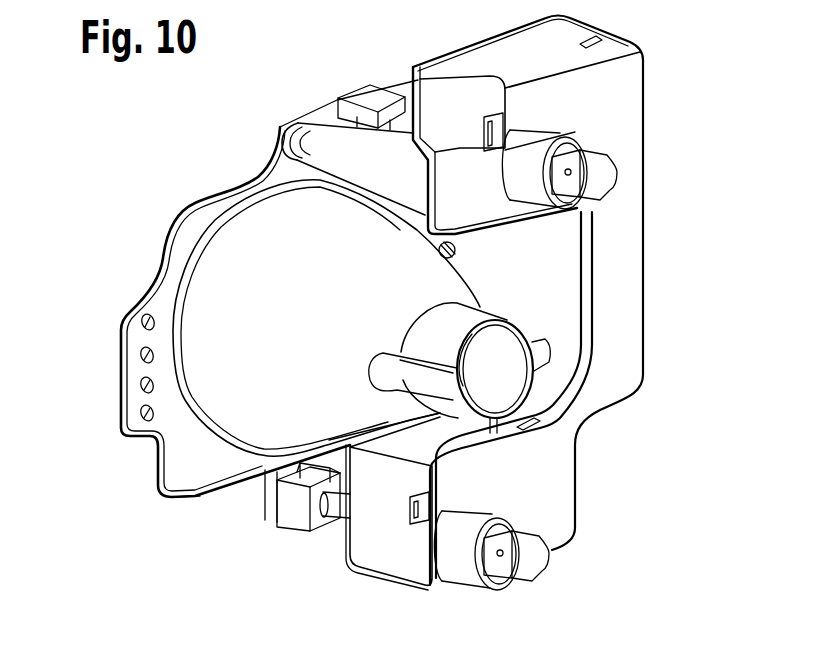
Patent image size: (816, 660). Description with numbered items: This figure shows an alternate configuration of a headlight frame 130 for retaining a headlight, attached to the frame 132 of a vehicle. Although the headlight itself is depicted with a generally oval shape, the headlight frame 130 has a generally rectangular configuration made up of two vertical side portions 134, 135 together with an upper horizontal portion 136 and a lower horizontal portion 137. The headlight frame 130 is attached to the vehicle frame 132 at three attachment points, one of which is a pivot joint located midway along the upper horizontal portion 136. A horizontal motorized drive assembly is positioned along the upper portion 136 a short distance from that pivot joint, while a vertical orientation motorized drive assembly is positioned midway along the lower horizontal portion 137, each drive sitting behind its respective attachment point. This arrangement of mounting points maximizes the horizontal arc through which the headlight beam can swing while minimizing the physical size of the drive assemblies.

The headlight frame 130 is at (123, 440).
The frame 132 is at (647, 203).
The vertical side portion 134 is at (117, 353).
The vertical side portion 135 is at (457, 248).
The upper horizontal portion 136 is at (223, 186).
The lower horizontal portion 137 is at (220, 498).